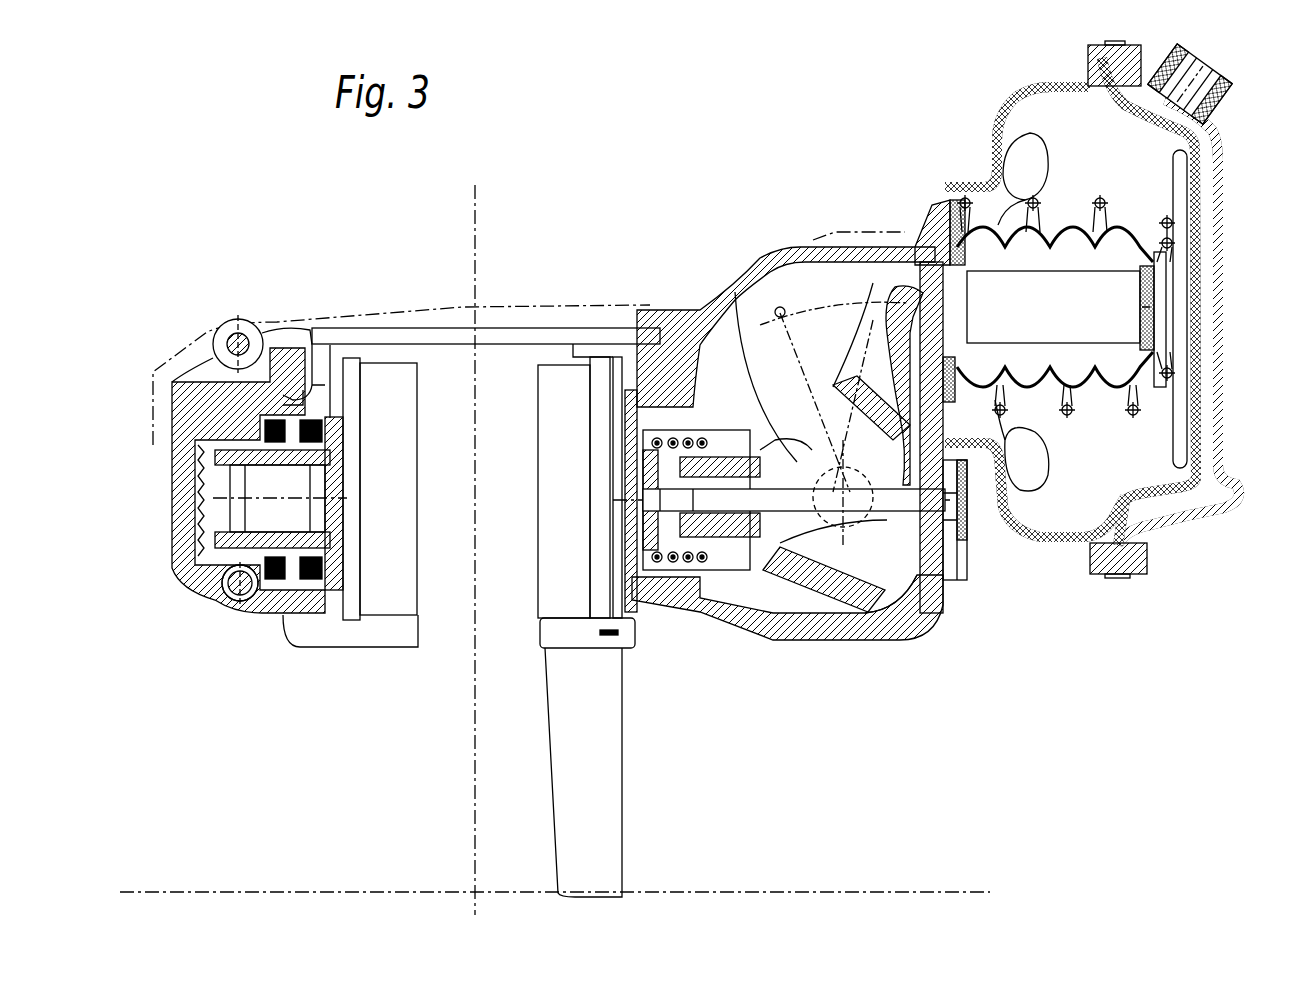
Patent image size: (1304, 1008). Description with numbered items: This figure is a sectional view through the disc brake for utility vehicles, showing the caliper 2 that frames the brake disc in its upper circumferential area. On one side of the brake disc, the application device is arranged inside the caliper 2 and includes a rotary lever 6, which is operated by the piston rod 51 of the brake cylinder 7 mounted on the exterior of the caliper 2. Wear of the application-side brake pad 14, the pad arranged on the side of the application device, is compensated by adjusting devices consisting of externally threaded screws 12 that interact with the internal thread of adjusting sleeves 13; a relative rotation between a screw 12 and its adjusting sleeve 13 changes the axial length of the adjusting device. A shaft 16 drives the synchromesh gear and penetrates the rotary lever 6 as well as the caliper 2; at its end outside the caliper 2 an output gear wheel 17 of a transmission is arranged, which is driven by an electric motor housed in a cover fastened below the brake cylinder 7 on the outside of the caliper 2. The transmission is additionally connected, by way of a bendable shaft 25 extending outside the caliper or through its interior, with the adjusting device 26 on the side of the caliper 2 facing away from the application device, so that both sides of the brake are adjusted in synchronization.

The caliper 2 is at (838, 625).
The rotary lever 6 is at (883, 627).
The brake cylinder 7 is at (1228, 172).
The screw 12 is at (230, 508).
The adjusting sleeve 13 is at (187, 577).
The application-side brake pad 14 is at (558, 383).
The shaft 16 is at (795, 510).
The output gear wheel 17 is at (967, 513).
The bendable shaft 25 is at (240, 602).
The adjusting device 26 is at (316, 400).
The piston rod 51 is at (945, 298).